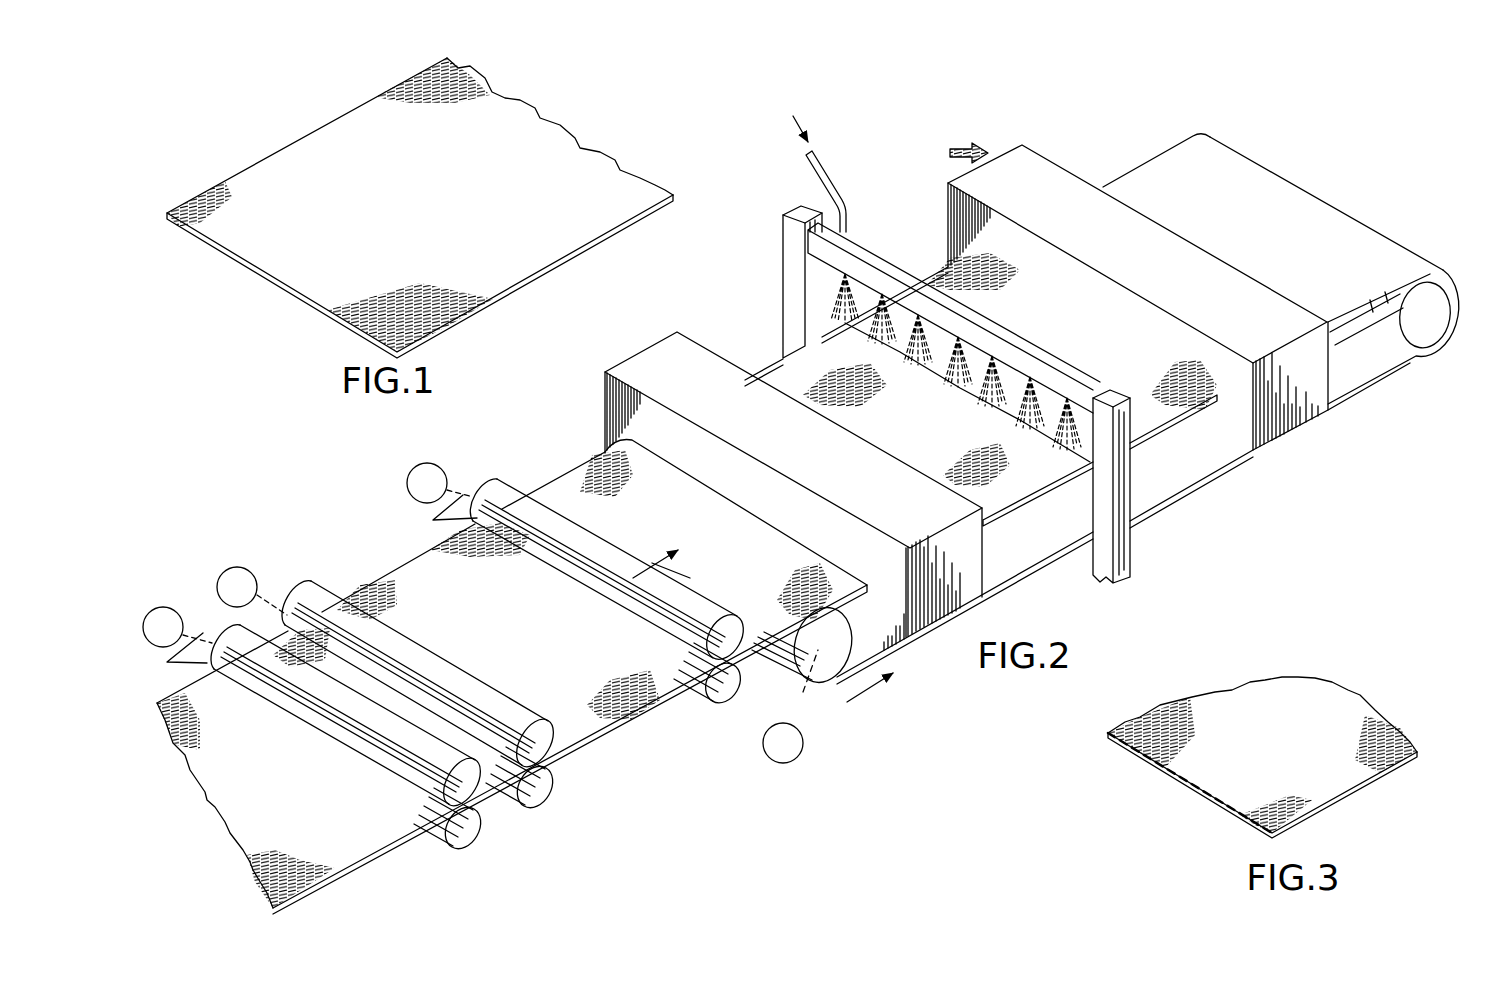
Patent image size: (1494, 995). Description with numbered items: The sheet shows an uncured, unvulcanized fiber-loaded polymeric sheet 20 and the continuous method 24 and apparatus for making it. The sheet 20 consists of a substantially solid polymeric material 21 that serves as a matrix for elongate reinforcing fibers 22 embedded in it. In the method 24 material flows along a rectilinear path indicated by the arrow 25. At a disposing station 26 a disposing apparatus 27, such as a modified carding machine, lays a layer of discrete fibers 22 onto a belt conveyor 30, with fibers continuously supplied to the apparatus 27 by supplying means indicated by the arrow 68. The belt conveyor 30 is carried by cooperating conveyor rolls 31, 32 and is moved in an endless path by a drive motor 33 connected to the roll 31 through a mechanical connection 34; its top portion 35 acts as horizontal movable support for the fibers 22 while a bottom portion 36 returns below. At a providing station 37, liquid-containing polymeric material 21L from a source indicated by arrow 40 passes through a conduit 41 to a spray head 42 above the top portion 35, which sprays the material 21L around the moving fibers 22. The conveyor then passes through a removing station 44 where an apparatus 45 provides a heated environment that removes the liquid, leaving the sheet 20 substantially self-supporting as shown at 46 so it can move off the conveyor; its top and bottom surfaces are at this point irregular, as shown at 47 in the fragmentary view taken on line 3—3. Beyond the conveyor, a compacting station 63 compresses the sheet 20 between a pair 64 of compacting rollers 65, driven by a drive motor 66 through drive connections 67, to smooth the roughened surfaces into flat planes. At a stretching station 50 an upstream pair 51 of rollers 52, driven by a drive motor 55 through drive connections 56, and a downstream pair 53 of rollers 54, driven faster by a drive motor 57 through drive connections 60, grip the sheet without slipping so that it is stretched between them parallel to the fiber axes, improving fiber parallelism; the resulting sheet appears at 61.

In FIG. 1, the fiber-loaded polymeric sheet 20 is at (425, 215).
In FIG. 3, the fiber-loaded polymeric sheet 20 is at (1269, 734).
In FIG. 1, the polymeric material 21 is at (357, 330).
In FIG. 2, the polymeric material 21 is at (490, 793).
In FIG. 3, the polymeric material 21 is at (1240, 815).
In FIG. 2, the liquid-containing polymeric material 21L is at (842, 300).
In FIG. 1, the elongate reinforcing fibers 22 is at (423, 75).
In FIG. 2, the elongate reinforcing fibers 22 is at (950, 152).
In FIG. 3, the elongate reinforcing fibers 22 is at (1150, 713).
In FIG. 2, the method of making the sheet 24 is at (1203, 257).
In FIG. 2, the flow path arrow 25 is at (1077, 561).
In FIG. 2, the disposing station 26 is at (1003, 190).
In FIG. 2, the disposing apparatus 27 is at (1077, 172).
In FIG. 2, the belt conveyor 30 is at (1334, 273).
In FIG. 2, the conveyor roll 31 is at (840, 640).
In FIG. 2, the conveyor roll 32 is at (1427, 330).
In FIG. 2, the drive motor 33 is at (772, 752).
In FIG. 2, the mechanical connection 34 is at (803, 703).
In FIG. 2, the top portion of belt conveyor 35 is at (1292, 270).
In FIG. 2, the bottom portion of belt conveyor 36 is at (1156, 465).
In FIG. 2, the providing station 37 is at (927, 336).
In FIG. 2, the source of polymeric material 40 is at (808, 126).
In FIG. 2, the conduit 41 is at (825, 160).
In FIG. 2, the spray head 42 is at (1000, 328).
In FIG. 2, the removing station 44 is at (742, 467).
In FIG. 2, the liquid-removing apparatus 45 is at (604, 402).
In FIG. 2, the self-supporting sheet 46 is at (580, 463).
In FIG. 3, the irregular sheet surfaces 47 is at (1180, 789).
In FIG. 2, the stretching station 50 is at (333, 573).
In FIG. 2, the upstream pair of rollers 51 is at (545, 812).
In FIG. 2, the roller 52 is at (460, 673).
In FIG. 2, the downstream pair of rollers 53 is at (465, 858).
In FIG. 2, the roller 54 is at (349, 777).
In FIG. 2, the drive motor 55 is at (228, 568).
In FIG. 2, the drive connections 56 is at (270, 612).
In FIG. 2, the drive motor 57 is at (165, 606).
In FIG. 2, the drive connections 60 is at (167, 662).
In FIG. 2, the resulting stretched sheet 61 is at (212, 812).
In FIG. 2, the compacting station 63 is at (478, 475).
In FIG. 2, the pair of compacting rollers 64 is at (730, 710).
In FIG. 2, the compacting roller 65 is at (586, 592).
In FIG. 2, the drive motor 66 is at (410, 478).
In FIG. 2, the drive connections 67 is at (433, 520).
In FIG. 2, the fiber supplying means arrow 68 is at (967, 146).
In FIG. 2, the section line 3— 3 is at (763, 623).